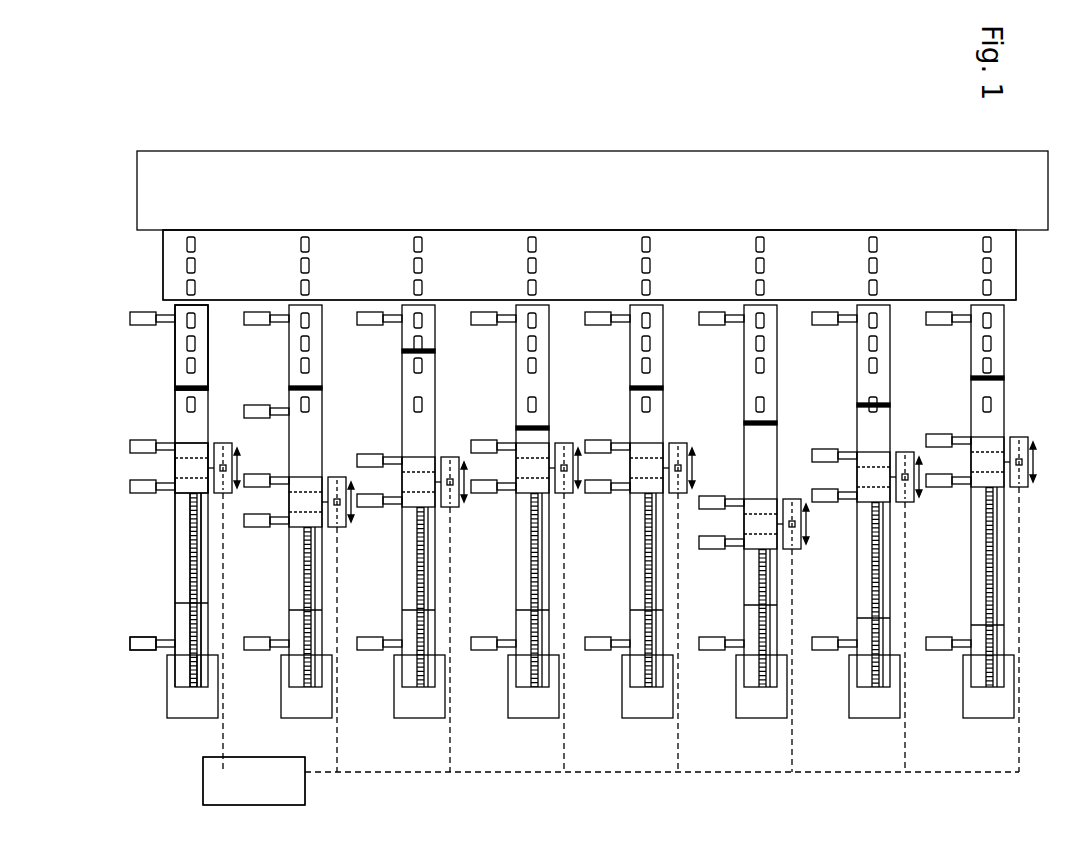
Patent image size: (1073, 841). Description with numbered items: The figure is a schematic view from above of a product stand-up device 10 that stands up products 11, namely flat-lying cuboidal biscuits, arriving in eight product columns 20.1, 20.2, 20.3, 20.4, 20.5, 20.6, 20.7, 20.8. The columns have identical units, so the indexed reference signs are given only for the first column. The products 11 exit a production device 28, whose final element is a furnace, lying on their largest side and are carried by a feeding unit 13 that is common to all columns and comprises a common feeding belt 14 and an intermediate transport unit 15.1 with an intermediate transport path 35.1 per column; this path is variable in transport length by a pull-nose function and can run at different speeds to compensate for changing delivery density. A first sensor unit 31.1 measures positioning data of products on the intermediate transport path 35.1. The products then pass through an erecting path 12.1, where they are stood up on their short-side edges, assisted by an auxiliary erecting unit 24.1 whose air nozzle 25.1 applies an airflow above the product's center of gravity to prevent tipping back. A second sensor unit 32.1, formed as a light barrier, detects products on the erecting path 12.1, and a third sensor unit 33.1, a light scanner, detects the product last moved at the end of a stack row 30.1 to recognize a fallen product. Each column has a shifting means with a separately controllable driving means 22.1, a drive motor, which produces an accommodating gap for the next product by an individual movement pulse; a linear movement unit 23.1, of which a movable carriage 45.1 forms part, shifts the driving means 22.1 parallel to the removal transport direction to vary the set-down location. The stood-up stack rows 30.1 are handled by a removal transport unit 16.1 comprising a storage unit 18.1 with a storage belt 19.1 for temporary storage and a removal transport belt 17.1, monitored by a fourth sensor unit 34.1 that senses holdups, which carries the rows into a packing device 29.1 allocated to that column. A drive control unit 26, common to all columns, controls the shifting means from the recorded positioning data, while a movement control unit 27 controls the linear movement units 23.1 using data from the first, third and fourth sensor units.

The product stand-up device 10 is at (805, 740).
The products 11 is at (186, 245).
The feeding unit 13 is at (156, 301).
The common feeding belt 14 is at (250, 266).
The production device 28 is at (150, 190).
The product column 20.1 is at (178, 355).
The product column 20.2 is at (294, 332).
The product column 20.3 is at (407, 332).
The product column 20.4 is at (521, 332).
The product column 20.5 is at (635, 332).
The product column 20.6 is at (749, 332).
The product column 20.7 is at (862, 332).
The product column 20.8 is at (976, 332).
The first sensor unit 31.1 is at (131, 315).
The intermediate transport unit 15.1 is at (181, 344).
The intermediate transport path 35.1 is at (181, 344).
The auxiliary erecting unit 24.1 is at (190, 445).
The air nozzle 25.1 is at (190, 445).
The erecting path 12.1 is at (204, 410).
The second sensor unit 32.1 is at (131, 446).
The third sensor unit 33.1 is at (131, 486).
The driving means 22.1 is at (224, 508).
The movable carriage 45.1 is at (192, 500).
The linear movement unit 23.1 is at (192, 500).
The storage unit 18.1 is at (183, 548).
The storage belt 19.1 is at (183, 548).
The removal transport unit 16.1 is at (160, 572).
The removal transport belt 17.1 is at (183, 624).
The fourth sensor unit 34.1 is at (141, 652).
The packing device 29.1 is at (182, 700).
The stack row 30.1 is at (196, 668).
The drive control unit 26 is at (213, 787).
The movement control unit 27 is at (213, 787).